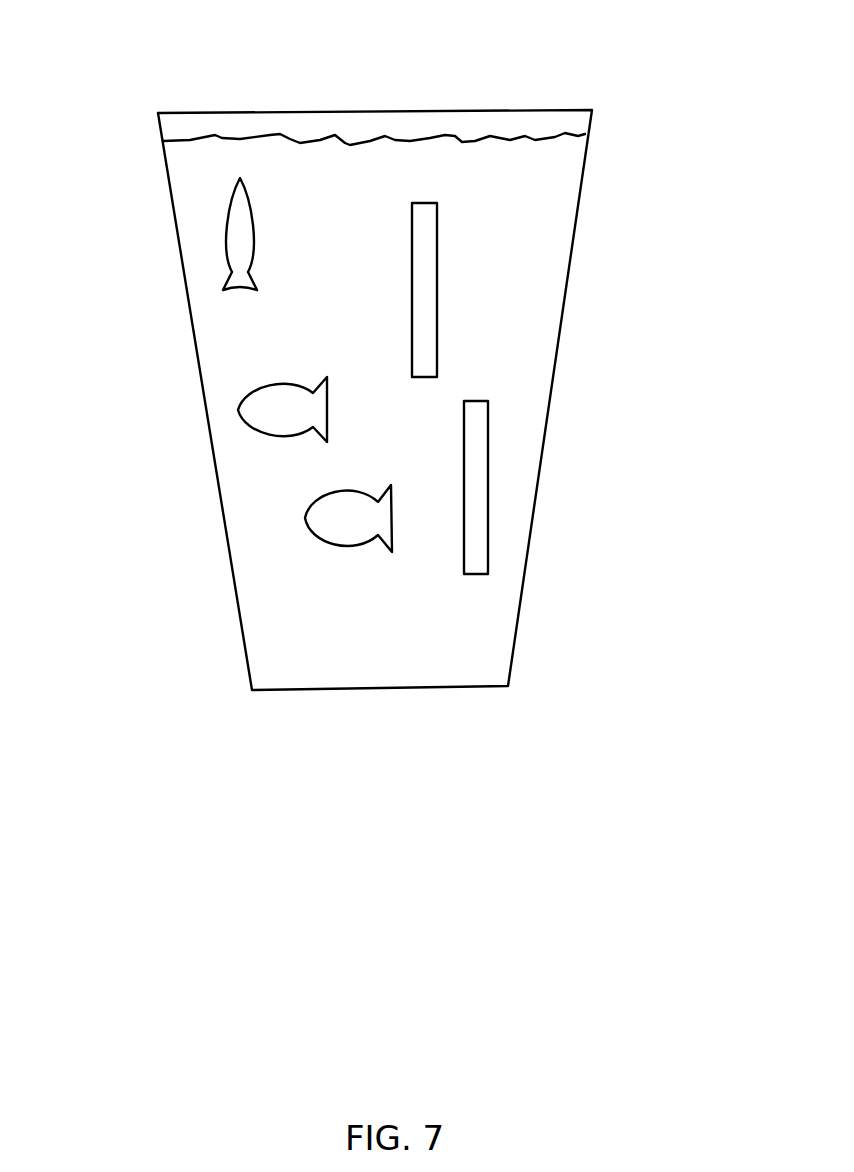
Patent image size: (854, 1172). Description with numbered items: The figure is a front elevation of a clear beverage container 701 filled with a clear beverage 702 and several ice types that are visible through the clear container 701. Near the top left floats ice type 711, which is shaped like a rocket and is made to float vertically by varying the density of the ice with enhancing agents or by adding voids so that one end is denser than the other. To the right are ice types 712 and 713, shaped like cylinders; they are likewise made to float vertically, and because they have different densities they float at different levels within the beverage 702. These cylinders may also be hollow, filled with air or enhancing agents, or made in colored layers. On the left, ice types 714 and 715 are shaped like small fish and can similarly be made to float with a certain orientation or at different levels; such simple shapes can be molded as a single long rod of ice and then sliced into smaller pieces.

The container 701 is at (581, 186).
The clear beverage 702 is at (463, 140).
The ice type 711 is at (222, 203).
The ice type 712 is at (441, 301).
The ice type 713 is at (497, 489).
The ice type 714 is at (245, 392).
The ice type 715 is at (304, 512).